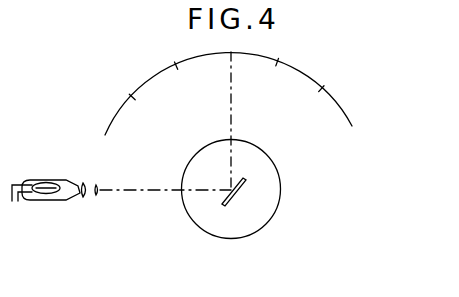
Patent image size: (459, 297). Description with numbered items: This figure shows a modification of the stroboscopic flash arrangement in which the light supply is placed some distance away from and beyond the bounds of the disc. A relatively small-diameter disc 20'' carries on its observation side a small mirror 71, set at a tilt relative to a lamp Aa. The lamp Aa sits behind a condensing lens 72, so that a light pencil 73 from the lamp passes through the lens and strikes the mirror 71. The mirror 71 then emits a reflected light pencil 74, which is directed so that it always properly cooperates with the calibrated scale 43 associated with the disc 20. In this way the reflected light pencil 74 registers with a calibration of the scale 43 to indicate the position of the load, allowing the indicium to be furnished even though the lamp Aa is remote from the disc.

The disc 20 is at (240, 94).
The calibrated scale 43 is at (278, 61).
The reflected light pencil 74 is at (226, 118).
The disc 20'' is at (231, 202).
The mirror 71 is at (236, 196).
The light pencil 73 is at (156, 191).
The lamp Aa is at (65, 200).
The condensing lens 72 is at (97, 197).